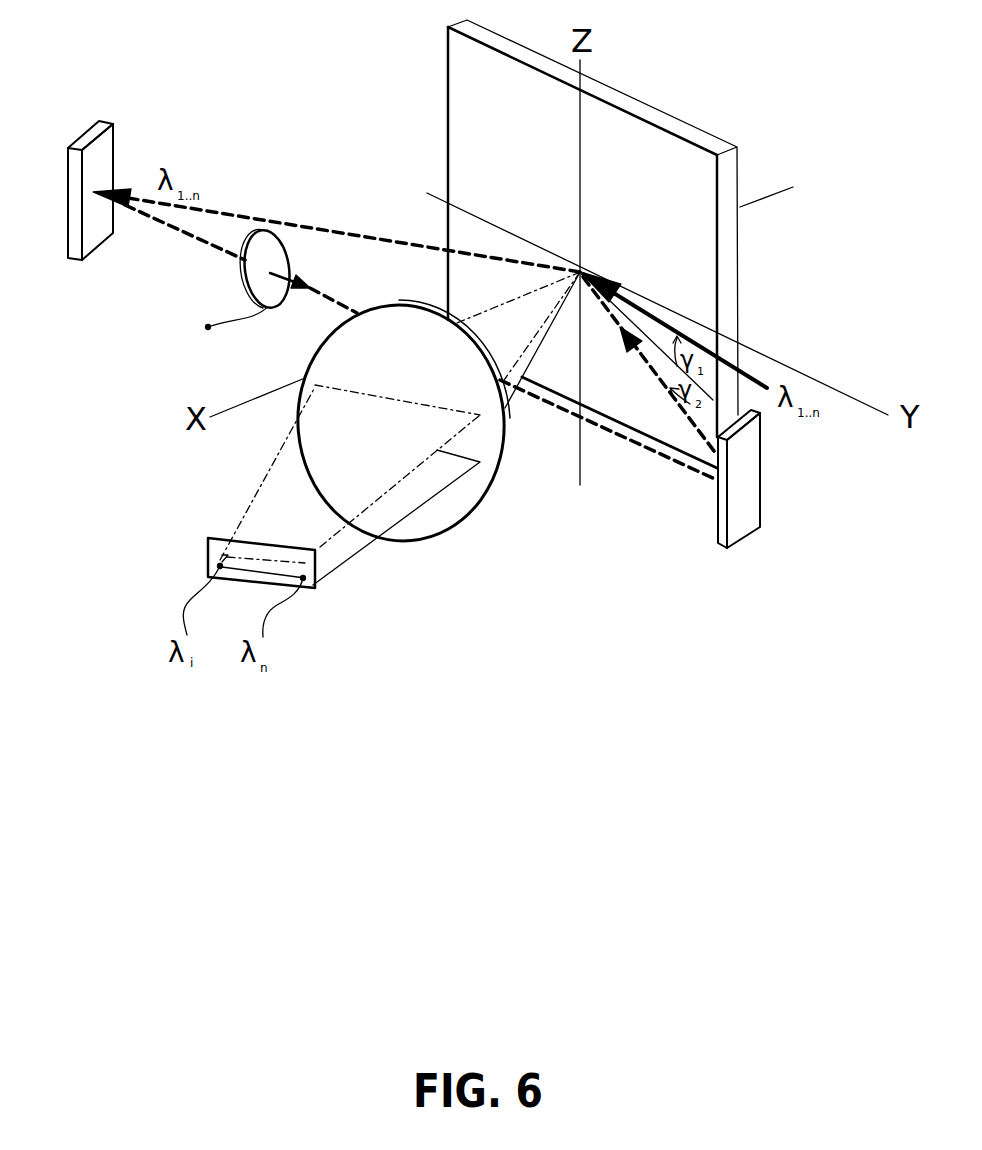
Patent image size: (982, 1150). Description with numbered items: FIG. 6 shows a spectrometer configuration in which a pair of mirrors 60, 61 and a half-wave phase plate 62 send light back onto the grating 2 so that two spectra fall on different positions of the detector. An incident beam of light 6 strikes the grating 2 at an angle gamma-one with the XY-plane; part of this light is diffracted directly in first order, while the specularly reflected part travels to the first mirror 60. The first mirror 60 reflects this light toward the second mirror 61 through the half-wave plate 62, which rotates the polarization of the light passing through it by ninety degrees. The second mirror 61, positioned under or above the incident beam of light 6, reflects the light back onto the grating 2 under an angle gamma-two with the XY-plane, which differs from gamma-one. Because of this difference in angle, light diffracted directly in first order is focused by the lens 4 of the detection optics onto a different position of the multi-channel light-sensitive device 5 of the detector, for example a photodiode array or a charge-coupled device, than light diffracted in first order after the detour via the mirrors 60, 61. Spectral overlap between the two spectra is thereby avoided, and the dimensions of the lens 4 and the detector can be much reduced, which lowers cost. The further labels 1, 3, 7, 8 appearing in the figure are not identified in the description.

The illumination light beam 1 is at (742, 353).
The grating 2 is at (708, 170).
The reflected light beam 3 is at (225, 213).
The lens 4 is at (470, 502).
The light-sensitive device 5 is at (312, 587).
The incident beam of light 6 is at (642, 332).
The beam edge ray 7 is at (322, 558).
The beam edge ray 8 is at (330, 530).
The first mirror 60 is at (95, 130).
The second mirror 61 is at (727, 548).
The half-wave phase plate 62 is at (290, 252).